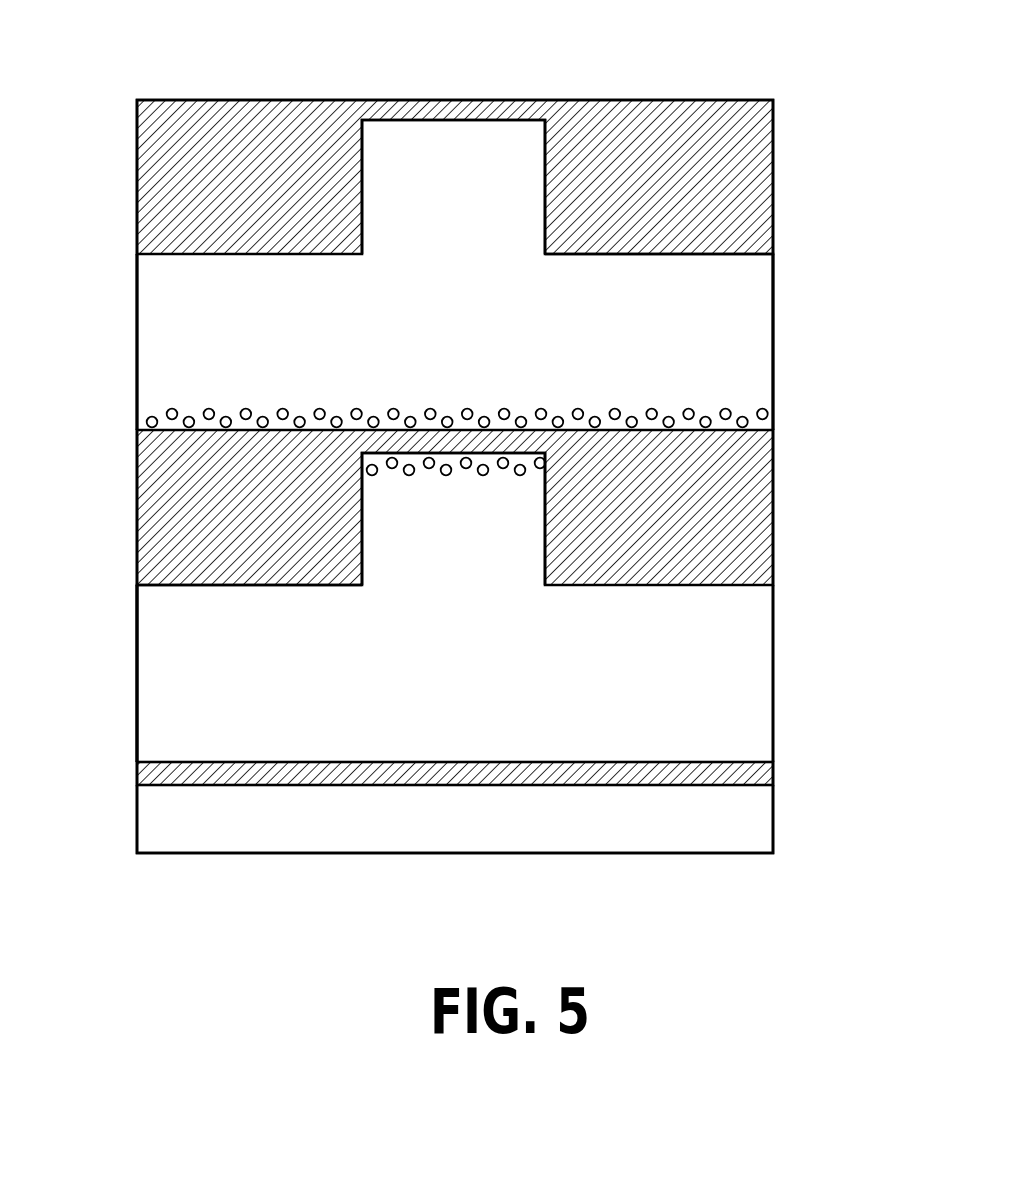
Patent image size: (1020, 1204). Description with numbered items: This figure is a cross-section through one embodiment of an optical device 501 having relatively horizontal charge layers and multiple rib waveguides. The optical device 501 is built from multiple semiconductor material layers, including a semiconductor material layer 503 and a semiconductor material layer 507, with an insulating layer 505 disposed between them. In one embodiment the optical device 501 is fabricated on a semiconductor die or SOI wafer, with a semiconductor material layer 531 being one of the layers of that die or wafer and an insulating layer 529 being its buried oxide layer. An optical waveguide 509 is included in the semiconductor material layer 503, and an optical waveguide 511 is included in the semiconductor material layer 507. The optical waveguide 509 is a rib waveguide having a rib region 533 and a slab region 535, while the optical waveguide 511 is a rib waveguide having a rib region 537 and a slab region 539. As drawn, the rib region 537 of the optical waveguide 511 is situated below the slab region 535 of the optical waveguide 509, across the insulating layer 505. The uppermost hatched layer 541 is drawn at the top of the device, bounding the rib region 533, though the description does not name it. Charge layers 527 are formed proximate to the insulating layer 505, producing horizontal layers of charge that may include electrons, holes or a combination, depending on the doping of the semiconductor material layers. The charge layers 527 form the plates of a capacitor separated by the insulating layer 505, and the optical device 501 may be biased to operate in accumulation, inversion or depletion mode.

The optical device 501 is at (836, 44).
The semiconductor material layer 503 is at (765, 303).
The insulating layer 505 is at (771, 484).
The semiconductor material layer 507 is at (765, 632).
The optical waveguide 509 is at (147, 323).
The optical waveguide 511 is at (147, 655).
The charge layers 527 is at (468, 410).
The insulating layer 529 is at (768, 770).
The semiconductor material layer 531 is at (765, 820).
The rib region 533 is at (488, 162).
The slab region 535 is at (682, 293).
The rib region 537 is at (418, 516).
The slab region 539 is at (172, 630).
The first hard mask layer 541 is at (765, 152).